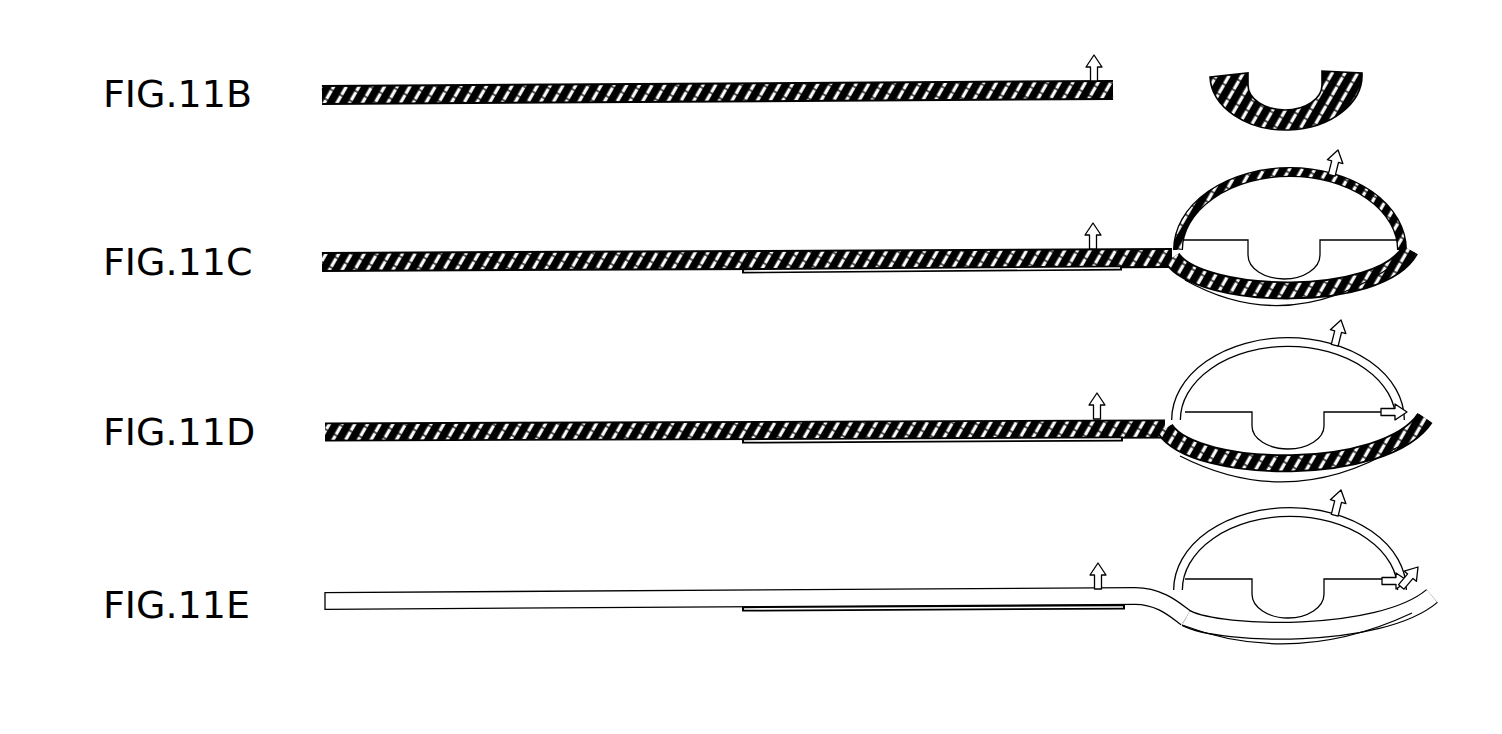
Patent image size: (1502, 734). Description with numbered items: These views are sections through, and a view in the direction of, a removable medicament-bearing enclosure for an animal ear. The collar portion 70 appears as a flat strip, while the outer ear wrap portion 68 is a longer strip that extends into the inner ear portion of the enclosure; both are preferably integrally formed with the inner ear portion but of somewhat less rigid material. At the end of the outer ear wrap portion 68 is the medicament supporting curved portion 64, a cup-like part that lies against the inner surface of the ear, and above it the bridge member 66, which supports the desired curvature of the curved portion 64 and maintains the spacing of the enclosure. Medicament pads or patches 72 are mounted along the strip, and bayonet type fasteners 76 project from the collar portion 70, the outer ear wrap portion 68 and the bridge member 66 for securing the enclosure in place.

In FIG. 11B, the medicament supporting curved portion 64 is at (1238, 76).
In FIG. 11C, the medicament supporting curved portion 64 is at (1385, 267).
In FIG. 11D, the medicament supporting curved portion 64 is at (1395, 441).
In FIG. 11E, the medicament supporting curved portion 64 is at (1415, 601).
In FIG. 11C, the bridge member 66 is at (1382, 201).
In FIG. 11D, the bridge member 66 is at (1368, 363).
In FIG. 11E, the bridge member 66 is at (1380, 544).
In FIG. 11C, the outer ear wrap portion 68 is at (518, 252).
In FIG. 11D, the outer ear wrap portion 68 is at (520, 422).
In FIG. 11E, the outer ear wrap portion 68 is at (520, 595).
In FIG. 11B, the collar portion 70 is at (542, 84).
In FIG. 11C, the pads or patches 72 is at (1215, 297).
In FIG. 11D, the pads or patches 72 is at (1205, 469).
In FIG. 11E, the pads or patches 72 is at (1225, 626).
In FIG. 11B, the bayonet type fasteners 76 is at (1101, 63).
In FIG. 11C, the bayonet type fasteners 76 is at (1101, 231).
In FIG. 11D, the bayonet type fasteners 76 is at (1103, 401).
In FIG. 11E, the bayonet type fasteners 76 is at (1108, 572).